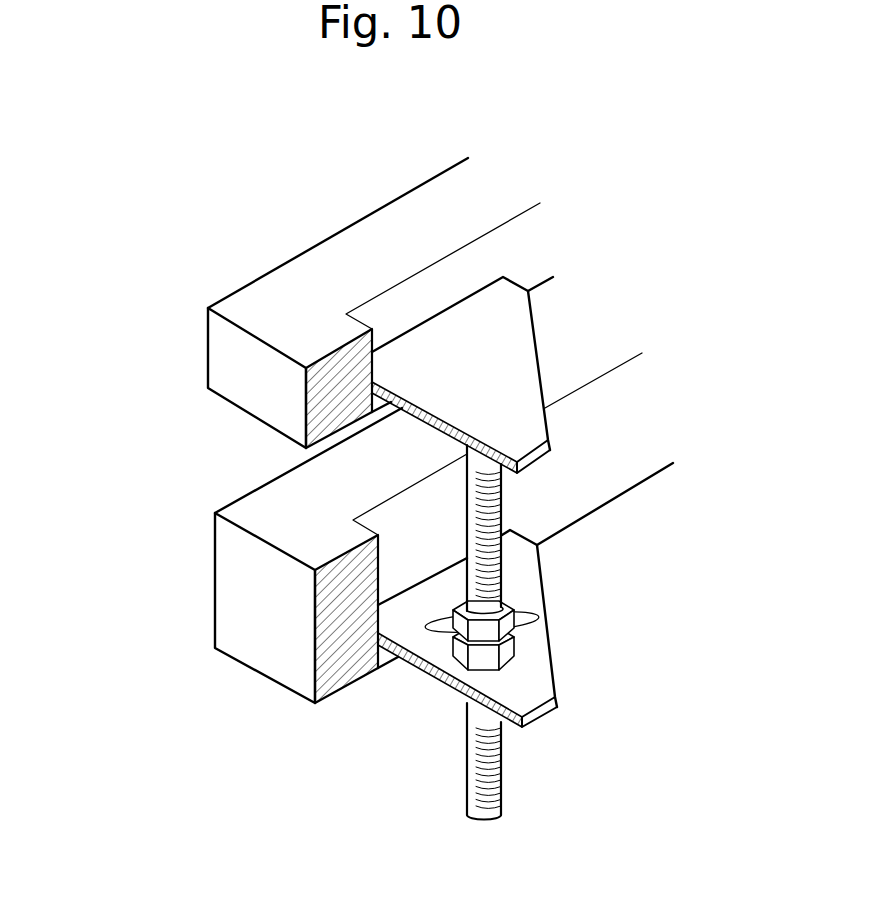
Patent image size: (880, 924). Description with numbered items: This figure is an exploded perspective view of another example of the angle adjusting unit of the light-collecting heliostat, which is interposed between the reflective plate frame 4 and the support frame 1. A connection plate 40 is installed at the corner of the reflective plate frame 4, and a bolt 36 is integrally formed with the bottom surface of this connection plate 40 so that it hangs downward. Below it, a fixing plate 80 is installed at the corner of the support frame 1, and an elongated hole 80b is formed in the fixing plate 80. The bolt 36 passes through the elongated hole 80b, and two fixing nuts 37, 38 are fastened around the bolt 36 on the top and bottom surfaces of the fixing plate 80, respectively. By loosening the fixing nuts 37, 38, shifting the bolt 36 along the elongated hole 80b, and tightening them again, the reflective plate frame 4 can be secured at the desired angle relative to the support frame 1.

The reflective plate frame 4 is at (228, 357).
The support frame 1 is at (252, 660).
The connection plate 40 is at (517, 390).
The fixing plate 80 is at (450, 687).
The elongated hole 80b is at (527, 620).
The bolt 36 is at (502, 507).
The fixing nut 37 is at (508, 623).
The fixing nut 38 is at (513, 657).